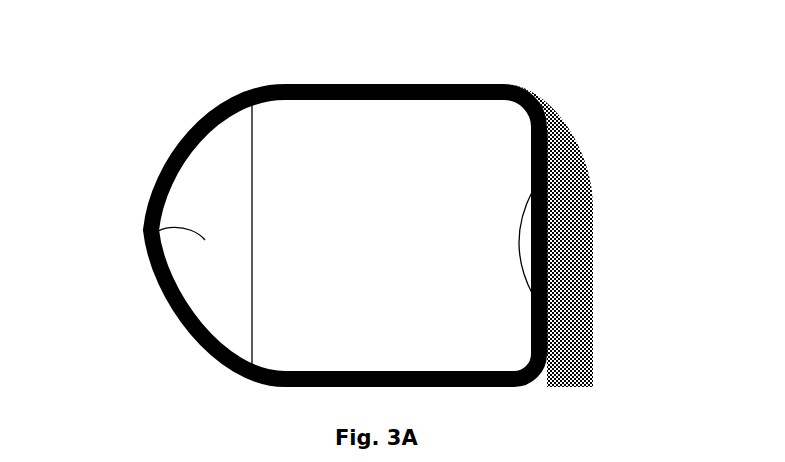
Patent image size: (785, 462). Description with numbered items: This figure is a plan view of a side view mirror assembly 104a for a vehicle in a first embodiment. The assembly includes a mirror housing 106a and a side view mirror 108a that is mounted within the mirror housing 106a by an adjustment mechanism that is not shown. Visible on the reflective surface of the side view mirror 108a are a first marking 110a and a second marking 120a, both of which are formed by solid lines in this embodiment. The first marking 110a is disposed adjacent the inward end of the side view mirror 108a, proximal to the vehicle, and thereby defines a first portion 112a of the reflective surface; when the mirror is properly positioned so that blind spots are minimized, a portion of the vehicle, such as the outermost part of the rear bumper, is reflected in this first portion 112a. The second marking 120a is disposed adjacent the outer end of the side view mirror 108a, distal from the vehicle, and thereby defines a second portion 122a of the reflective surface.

The side view mirror assembly 104a is at (408, 49).
The mirror housing 106a is at (593, 335).
The side view mirror 108a is at (410, 265).
The first marking 110a is at (533, 192).
The first portion 112a is at (593, 220).
The second marking 120a is at (252, 198).
The second portion 122a is at (145, 242).